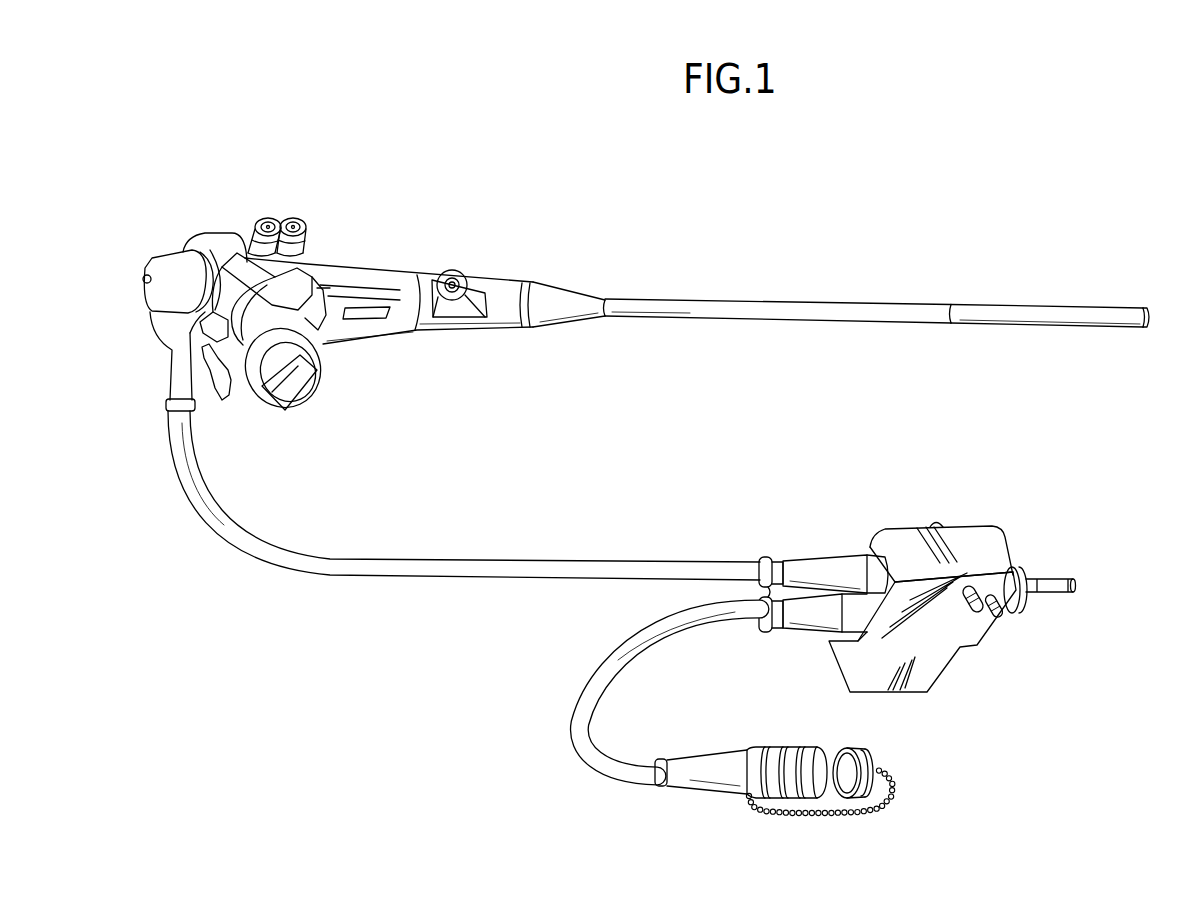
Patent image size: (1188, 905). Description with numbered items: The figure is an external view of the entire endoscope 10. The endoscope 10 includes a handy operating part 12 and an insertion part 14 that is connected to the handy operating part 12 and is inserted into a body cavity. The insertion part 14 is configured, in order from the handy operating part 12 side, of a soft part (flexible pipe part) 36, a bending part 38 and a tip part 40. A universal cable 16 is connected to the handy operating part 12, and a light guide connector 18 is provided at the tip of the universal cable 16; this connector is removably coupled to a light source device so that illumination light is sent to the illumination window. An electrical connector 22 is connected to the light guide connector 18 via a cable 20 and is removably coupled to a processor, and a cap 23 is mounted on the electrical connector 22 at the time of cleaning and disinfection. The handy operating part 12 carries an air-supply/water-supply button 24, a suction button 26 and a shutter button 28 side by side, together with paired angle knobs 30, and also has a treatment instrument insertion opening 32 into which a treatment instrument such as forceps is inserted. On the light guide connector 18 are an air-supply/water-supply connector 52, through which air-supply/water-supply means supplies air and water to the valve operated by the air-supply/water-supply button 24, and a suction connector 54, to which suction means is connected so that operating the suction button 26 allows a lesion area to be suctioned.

The endoscope 10 is at (688, 203).
The handy operating part 12 is at (359, 216).
The insertion part 14 is at (894, 284).
The universal cable 16 is at (462, 575).
The light guide (LG) connector 18 is at (895, 540).
The cable 20 is at (572, 730).
The electrical connector 22 is at (802, 745).
The cap 23 is at (869, 762).
The air-supply/water-supply button 24 is at (287, 216).
The suction button 26 is at (263, 217).
The shutter button 28 is at (222, 237).
The angle knobs 30 is at (229, 388).
The treatment instrument insertion opening 32 is at (455, 268).
The soft part (flexible pipe part) 36 is at (775, 302).
The bending part 38 is at (1028, 310).
The tip part 40 is at (1150, 303).
The air-supply/water-supply connector 52 is at (940, 523).
The suction connector 54 is at (993, 620).